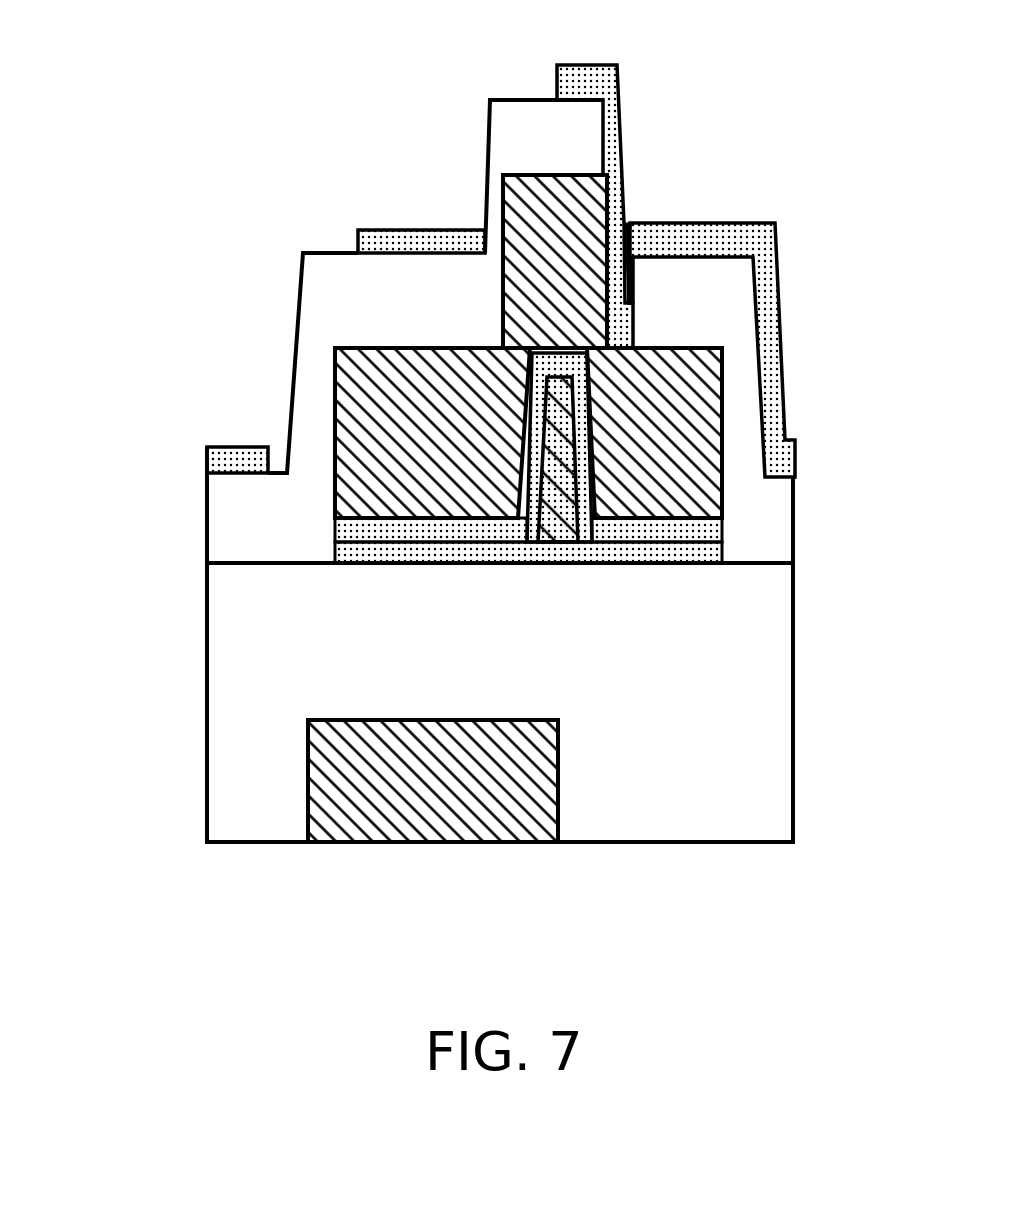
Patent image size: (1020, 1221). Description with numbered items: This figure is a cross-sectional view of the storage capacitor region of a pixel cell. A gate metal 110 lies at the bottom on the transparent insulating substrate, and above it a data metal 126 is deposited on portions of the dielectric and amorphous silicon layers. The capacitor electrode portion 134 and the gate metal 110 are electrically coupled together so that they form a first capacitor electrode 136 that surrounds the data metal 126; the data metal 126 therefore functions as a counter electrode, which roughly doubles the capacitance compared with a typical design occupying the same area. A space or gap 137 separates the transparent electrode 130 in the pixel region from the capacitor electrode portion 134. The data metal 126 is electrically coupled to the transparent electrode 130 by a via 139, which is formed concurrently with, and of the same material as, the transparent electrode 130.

The gate metal 110 is at (362, 833).
The data metal 126 is at (705, 490).
The transparent electrode 130 is at (782, 267).
The capacitor electrode portion 134 is at (403, 226).
The first capacitor electrode 136 is at (308, 750).
The space or gap 137 is at (518, 90).
The via 139 is at (628, 300).